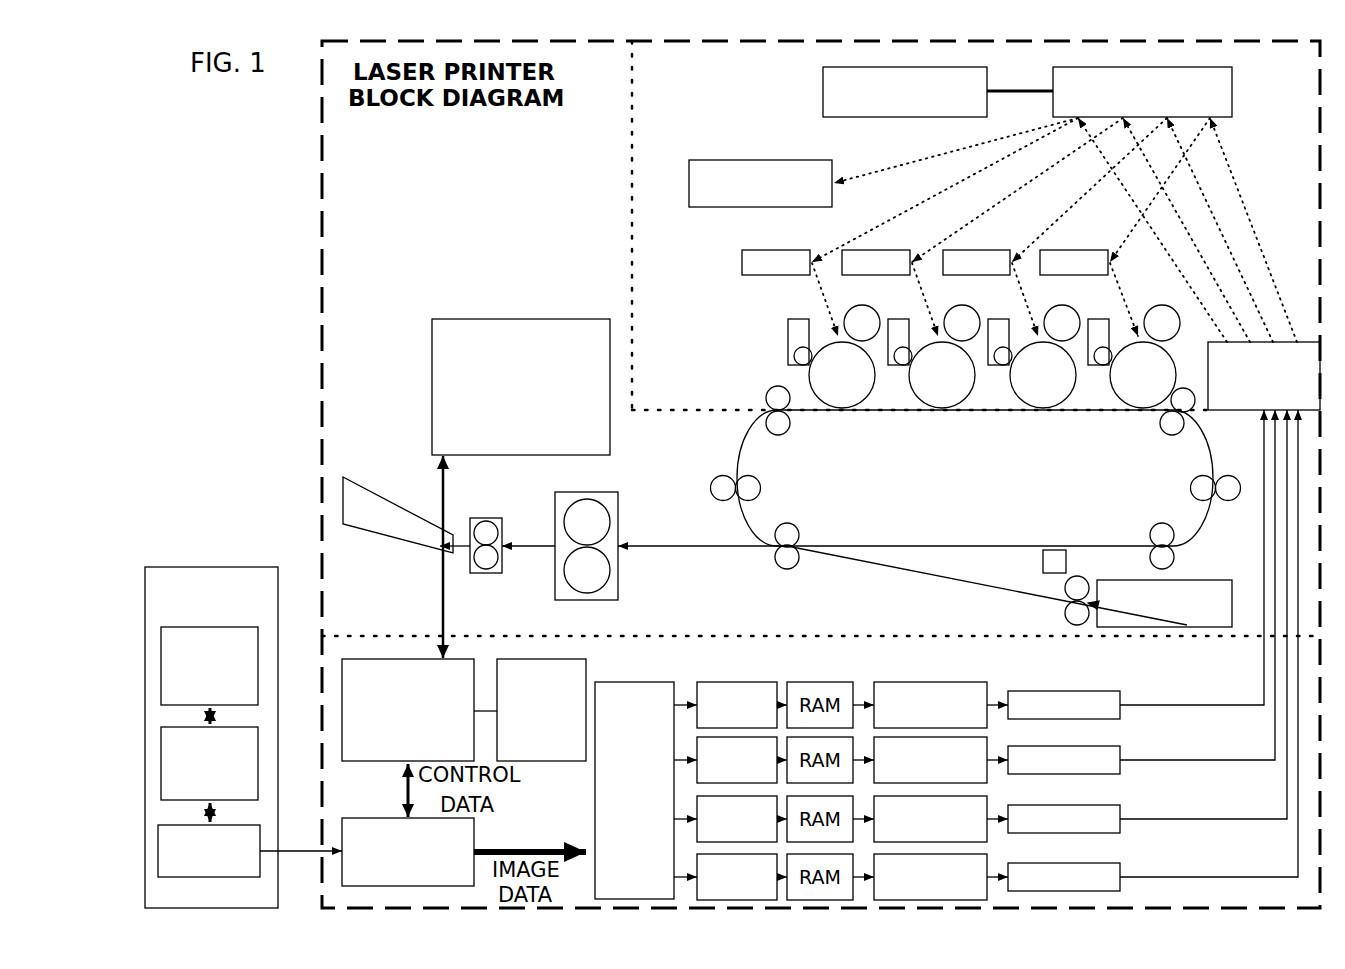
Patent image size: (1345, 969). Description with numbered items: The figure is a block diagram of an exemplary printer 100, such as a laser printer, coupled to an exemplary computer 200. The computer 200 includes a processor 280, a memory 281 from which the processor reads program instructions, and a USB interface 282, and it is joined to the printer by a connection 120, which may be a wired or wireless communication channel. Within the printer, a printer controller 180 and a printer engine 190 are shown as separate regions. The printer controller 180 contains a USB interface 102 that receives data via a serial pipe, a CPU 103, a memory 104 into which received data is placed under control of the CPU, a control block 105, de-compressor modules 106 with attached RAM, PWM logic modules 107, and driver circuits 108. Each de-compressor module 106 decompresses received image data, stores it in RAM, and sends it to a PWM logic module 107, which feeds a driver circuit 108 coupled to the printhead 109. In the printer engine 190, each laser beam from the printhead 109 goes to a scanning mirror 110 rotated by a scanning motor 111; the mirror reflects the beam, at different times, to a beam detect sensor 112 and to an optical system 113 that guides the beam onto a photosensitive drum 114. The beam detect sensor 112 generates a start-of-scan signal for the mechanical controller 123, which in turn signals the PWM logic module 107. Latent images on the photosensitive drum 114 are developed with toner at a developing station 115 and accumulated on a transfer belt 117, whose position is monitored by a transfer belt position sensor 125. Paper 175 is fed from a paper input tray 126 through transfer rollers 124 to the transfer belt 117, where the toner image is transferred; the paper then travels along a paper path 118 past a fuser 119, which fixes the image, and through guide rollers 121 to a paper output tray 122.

The printer 100 is at (322, 392).
The USB interface 102 is at (408, 852).
The CPU 103 is at (408, 710).
The memory 104 is at (541, 710).
The control block 105 is at (634, 790).
The de-compressor module 106 is at (737, 791).
The PWM logic module 107 is at (930, 791).
The driver circuit 108 is at (757, 366).
The printhead 109 is at (1264, 376).
The scanning mirror 110 is at (1142, 92).
The scanning motor 111 is at (905, 92).
The beam detect sensor 112 is at (760, 183).
The optical system 113 is at (763, 250).
The photosensitive drum 114 is at (1176, 382).
The developing station 115 is at (783, 342).
The transfer belt 117 is at (740, 458).
The paper path 118 is at (714, 501).
The fuser 119 is at (617, 563).
The connection 120 is at (315, 848).
The guide rollers 121 is at (495, 513).
The paper output tray 122 is at (388, 498).
The mechanical controller 123 is at (521, 387).
The transfer rollers 124 is at (793, 569).
The transfer belt position sensor 125 is at (1040, 565).
The paper input tray 126 is at (1148, 601).
The paper 175 is at (987, 593).
The printer controller 180 is at (382, 635).
The printer engine 190 is at (628, 197).
The computer 200 is at (211, 737).
The processor 280 is at (209, 763).
The memory 281 is at (209, 666).
The USB interface 282 is at (209, 851).